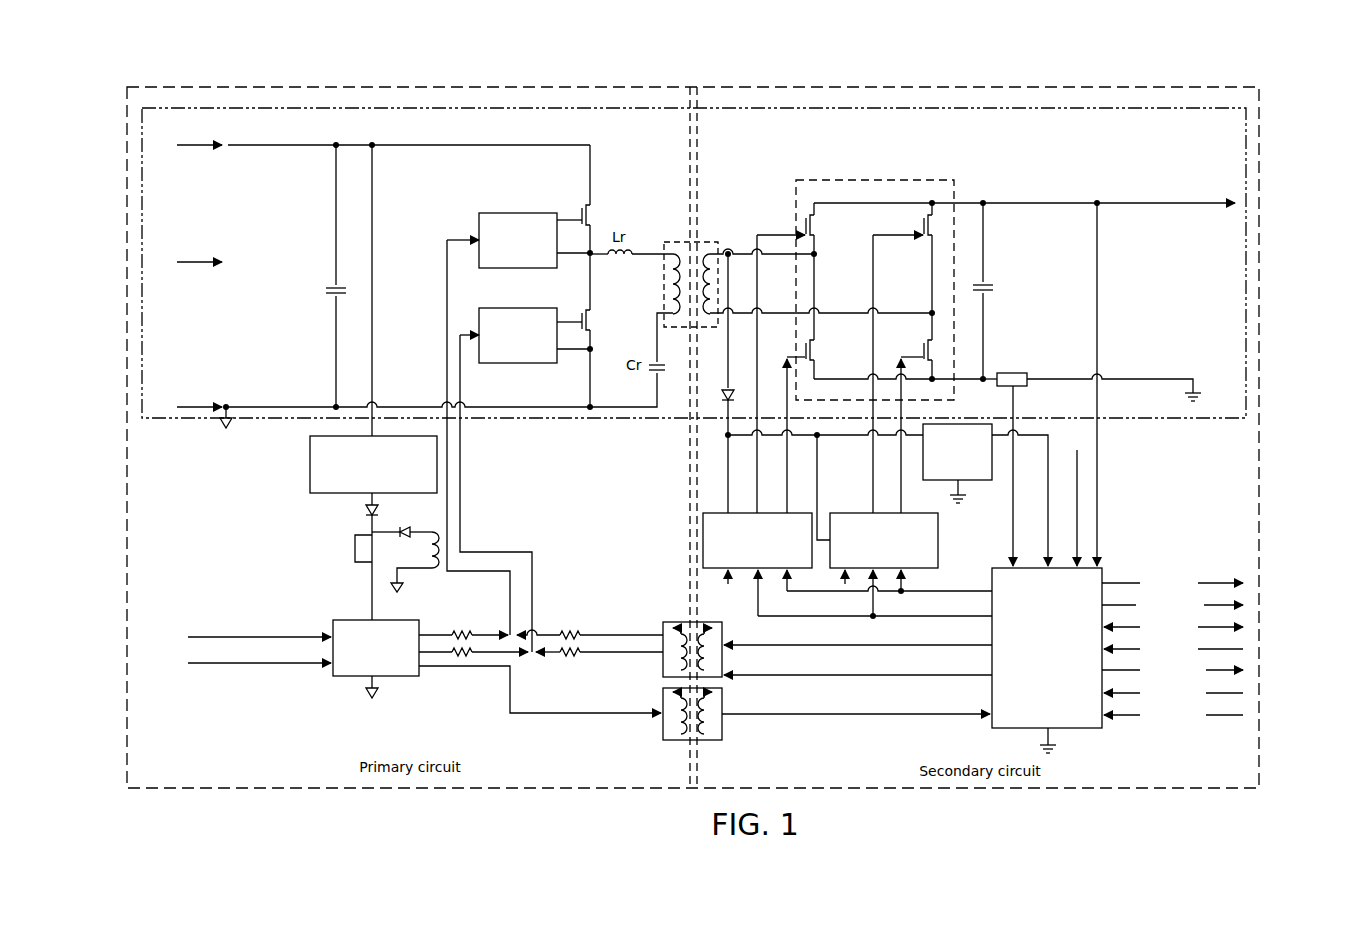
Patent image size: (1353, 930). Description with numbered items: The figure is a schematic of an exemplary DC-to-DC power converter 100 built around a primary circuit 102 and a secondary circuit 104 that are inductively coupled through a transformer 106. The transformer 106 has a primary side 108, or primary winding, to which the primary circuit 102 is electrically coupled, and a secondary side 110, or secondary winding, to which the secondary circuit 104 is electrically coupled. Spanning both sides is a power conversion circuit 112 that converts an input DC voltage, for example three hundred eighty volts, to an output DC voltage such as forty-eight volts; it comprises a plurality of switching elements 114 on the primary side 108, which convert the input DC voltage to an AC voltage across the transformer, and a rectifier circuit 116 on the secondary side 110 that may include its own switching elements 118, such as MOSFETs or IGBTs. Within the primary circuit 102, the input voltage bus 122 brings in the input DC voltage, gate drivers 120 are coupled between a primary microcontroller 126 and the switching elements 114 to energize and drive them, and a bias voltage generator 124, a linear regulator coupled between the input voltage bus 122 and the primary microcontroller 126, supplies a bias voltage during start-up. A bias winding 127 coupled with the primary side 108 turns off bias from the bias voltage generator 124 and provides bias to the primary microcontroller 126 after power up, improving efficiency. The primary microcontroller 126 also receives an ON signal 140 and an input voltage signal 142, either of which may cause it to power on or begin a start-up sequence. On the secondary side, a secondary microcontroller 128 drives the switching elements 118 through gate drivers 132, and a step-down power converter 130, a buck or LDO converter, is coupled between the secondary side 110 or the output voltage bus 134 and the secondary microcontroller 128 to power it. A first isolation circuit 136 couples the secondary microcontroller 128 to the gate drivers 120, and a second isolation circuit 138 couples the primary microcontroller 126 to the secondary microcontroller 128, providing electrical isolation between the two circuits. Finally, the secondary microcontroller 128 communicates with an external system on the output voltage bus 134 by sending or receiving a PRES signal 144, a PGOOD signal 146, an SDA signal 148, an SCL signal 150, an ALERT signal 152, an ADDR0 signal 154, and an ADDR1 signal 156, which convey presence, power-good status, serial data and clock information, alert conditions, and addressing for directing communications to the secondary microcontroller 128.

The DC-to-DC power converter 100 is at (1183, 75).
The primary circuit 102 is at (490, 88).
The secondary circuit 104 is at (760, 88).
The transformer 106 is at (706, 249).
The primary side 108 is at (670, 246).
The secondary side 110 is at (720, 250).
The power conversion circuit 112 is at (400, 106).
The switching elements 114 is at (592, 205).
The rectifier circuit 116 is at (902, 181).
The switching elements 118 is at (942, 216).
The gate drivers 120 is at (479, 254).
The input voltage bus 122 is at (273, 150).
The bias voltage generator 124 is at (308, 463).
The primary microcontroller 126 is at (401, 678).
The bias winding 127 is at (412, 530).
The secondary microcontroller 128 is at (1104, 729).
The step-down power converter 130 is at (923, 460).
The gate drivers 132 is at (727, 586).
The output voltage bus 134 is at (1200, 201).
The first isolation circuit 136 is at (726, 651).
The second isolation circuit 138 is at (726, 700).
The ON signal 140 is at (202, 634).
The input voltage signal 142 is at (203, 668).
The PRES signal 144 is at (1222, 583).
The PGOOD signal 146 is at (1247, 604).
The SDA signal 148 is at (1247, 626).
The SCL signal 150 is at (1247, 648).
The ALERT signal 152 is at (1247, 670).
The ADDR0 signal 154 is at (1247, 692).
The ADDR1 signal 156 is at (1247, 714).